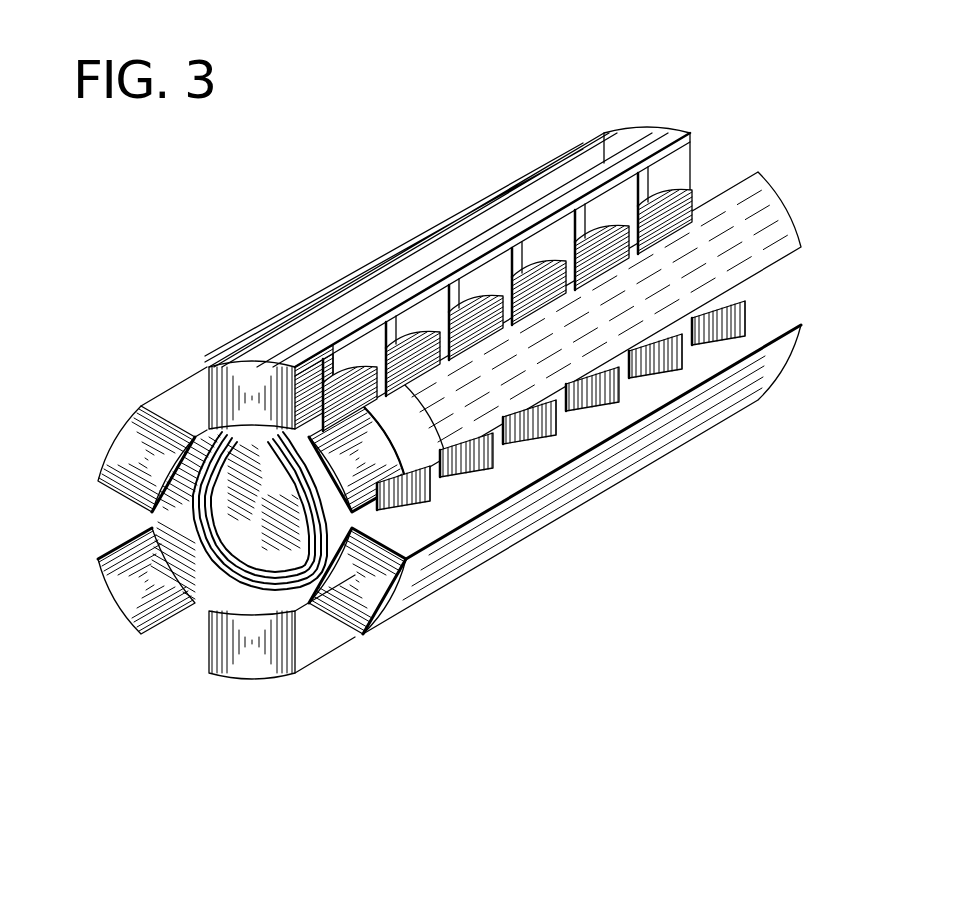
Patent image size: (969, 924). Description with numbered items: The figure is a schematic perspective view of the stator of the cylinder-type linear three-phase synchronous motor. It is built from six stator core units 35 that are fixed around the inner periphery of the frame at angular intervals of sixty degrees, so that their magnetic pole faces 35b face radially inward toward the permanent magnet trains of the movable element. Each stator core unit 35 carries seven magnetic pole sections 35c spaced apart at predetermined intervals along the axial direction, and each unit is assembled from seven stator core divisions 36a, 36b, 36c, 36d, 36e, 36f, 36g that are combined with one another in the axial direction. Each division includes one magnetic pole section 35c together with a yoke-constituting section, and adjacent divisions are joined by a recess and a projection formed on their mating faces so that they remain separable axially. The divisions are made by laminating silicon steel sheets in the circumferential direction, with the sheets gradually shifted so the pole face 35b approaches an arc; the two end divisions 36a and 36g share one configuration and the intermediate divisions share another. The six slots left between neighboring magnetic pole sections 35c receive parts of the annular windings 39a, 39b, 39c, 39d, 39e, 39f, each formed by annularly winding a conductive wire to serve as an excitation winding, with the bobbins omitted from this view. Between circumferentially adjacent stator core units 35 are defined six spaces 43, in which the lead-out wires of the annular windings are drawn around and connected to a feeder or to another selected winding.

The stator core unit 35 is at (241, 367).
The magnetic pole face 35b is at (148, 500).
The magnetic pole section 35c is at (350, 347).
The stator core division 36a is at (216, 365).
The stator core division 36b is at (305, 330).
The stator core division 36c is at (372, 388).
The stator core division 36d is at (437, 350).
The stator core division 36e is at (490, 305).
The stator core division 36f is at (585, 160).
The stator core division 36g is at (663, 187).
The annular winding 39a is at (356, 392).
The annular winding 39b is at (447, 335).
The annular winding 39c is at (500, 310).
The annular winding 39d is at (552, 273).
The annular winding 39e is at (607, 225).
The annular winding 39f is at (677, 200).
The space 43 is at (180, 397).